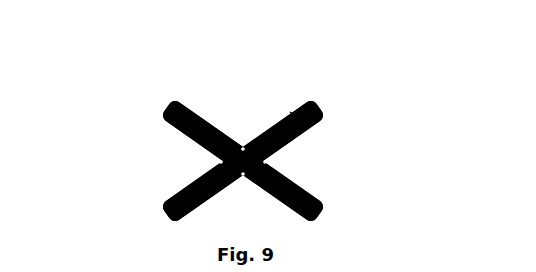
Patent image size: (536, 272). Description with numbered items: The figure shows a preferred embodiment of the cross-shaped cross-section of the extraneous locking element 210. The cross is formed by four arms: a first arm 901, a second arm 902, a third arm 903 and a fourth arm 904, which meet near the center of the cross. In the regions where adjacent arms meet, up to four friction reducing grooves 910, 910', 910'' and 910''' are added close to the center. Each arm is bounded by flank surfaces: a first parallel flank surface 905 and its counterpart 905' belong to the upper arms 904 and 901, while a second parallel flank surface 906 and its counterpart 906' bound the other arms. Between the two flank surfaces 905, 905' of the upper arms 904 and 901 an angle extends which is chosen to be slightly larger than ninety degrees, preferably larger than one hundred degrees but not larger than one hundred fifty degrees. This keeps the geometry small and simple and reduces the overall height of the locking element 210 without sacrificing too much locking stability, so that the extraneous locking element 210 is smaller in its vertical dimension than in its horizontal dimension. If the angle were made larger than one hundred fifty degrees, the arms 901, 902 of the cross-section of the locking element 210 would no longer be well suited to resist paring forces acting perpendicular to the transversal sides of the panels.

The first arm of the cross 901 is at (328, 109).
The second arm of the cross 902 is at (326, 208).
The third arm of the cross 903 is at (161, 209).
The fourth arm of the cross 904 is at (162, 106).
The first parallel flank surface of a cross arm 905 is at (323, 67).
The flank surface of a cross arm 905' is at (206, 81).
The second parallel flank surface of a cross arm 906 is at (359, 114).
The second parallel flank surface of a cross arm 906' is at (132, 134).
The extraneous locking element 210 is at (216, 126).
The friction reducing groove 910 is at (268, 107).
The friction reducing groove 910' is at (308, 148).
The friction reducing groove 910'' is at (237, 199).
The friction reducing groove 910''' is at (178, 157).